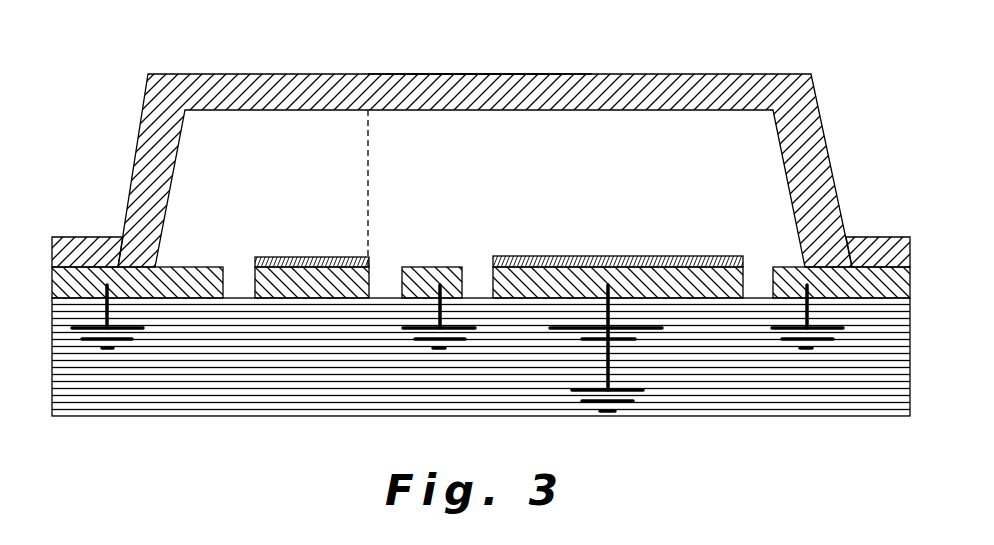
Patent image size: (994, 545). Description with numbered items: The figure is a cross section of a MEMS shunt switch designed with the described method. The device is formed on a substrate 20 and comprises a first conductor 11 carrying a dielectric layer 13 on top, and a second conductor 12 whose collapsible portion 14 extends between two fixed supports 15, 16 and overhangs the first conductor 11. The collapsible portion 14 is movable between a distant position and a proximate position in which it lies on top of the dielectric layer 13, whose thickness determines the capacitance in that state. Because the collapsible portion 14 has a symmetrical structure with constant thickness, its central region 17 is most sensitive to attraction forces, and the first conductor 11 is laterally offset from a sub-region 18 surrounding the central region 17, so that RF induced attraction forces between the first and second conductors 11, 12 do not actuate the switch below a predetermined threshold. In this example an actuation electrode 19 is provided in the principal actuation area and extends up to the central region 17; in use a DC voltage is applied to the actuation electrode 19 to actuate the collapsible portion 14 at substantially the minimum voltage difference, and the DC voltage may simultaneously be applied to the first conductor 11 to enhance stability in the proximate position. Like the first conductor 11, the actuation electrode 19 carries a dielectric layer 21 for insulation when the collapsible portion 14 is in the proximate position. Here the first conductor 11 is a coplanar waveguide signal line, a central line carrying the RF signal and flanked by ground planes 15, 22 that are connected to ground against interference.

The first conductor 11 is at (297, 273).
The second conductor 12 is at (105, 245).
The dielectric layer 13 is at (273, 257).
The collapsible portion 14 is at (258, 90).
The fixed support 15 is at (90, 285).
The fixed support 16 is at (870, 277).
The central region 17 is at (484, 67).
The sub-region 18 is at (368, 72).
The actuation electrode 19 is at (675, 258).
The substrate 20 is at (773, 390).
The dielectric layer 21 is at (555, 256).
The ground plane 22 is at (428, 267).